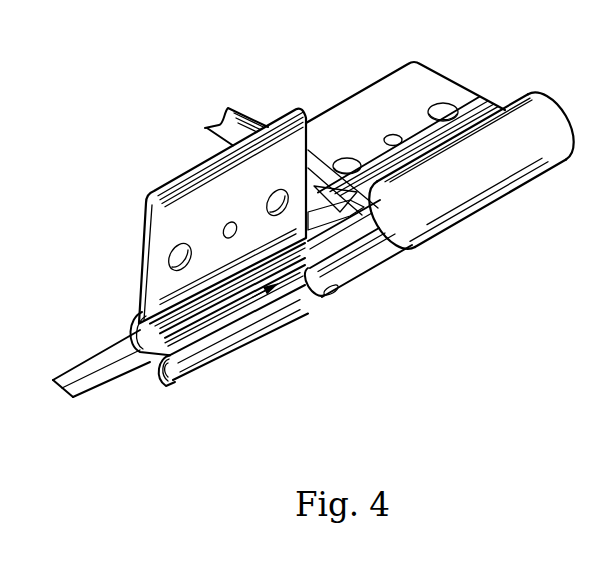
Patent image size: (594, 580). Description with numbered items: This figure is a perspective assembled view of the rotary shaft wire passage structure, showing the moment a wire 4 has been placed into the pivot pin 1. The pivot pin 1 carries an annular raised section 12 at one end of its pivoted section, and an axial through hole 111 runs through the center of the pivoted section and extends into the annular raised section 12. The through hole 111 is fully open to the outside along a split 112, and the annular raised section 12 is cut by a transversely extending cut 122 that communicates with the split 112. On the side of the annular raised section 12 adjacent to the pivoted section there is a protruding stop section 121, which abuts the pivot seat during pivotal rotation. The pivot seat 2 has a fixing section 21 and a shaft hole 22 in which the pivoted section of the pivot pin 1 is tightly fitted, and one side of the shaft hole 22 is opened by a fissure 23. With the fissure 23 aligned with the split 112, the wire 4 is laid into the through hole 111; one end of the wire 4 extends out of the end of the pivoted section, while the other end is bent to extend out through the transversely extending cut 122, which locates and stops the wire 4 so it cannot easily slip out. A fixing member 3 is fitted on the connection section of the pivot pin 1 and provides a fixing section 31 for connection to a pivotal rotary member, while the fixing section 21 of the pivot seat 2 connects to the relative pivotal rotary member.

The pivot pin 1 is at (377, 277).
The annular raised section 12 is at (378, 247).
The stop section 121 is at (327, 293).
The transversely extending cut 122 is at (376, 178).
The split 112 is at (349, 294).
The fissure 23 is at (291, 288).
The through hole 111 is at (142, 381).
The pivot seat 2 is at (205, 388).
The fixing section 21 is at (207, 200).
The shaft hole 22 is at (160, 381).
The fixing member 3 is at (487, 177).
The fixing section 31 is at (392, 90).
The wire 4 is at (93, 368).